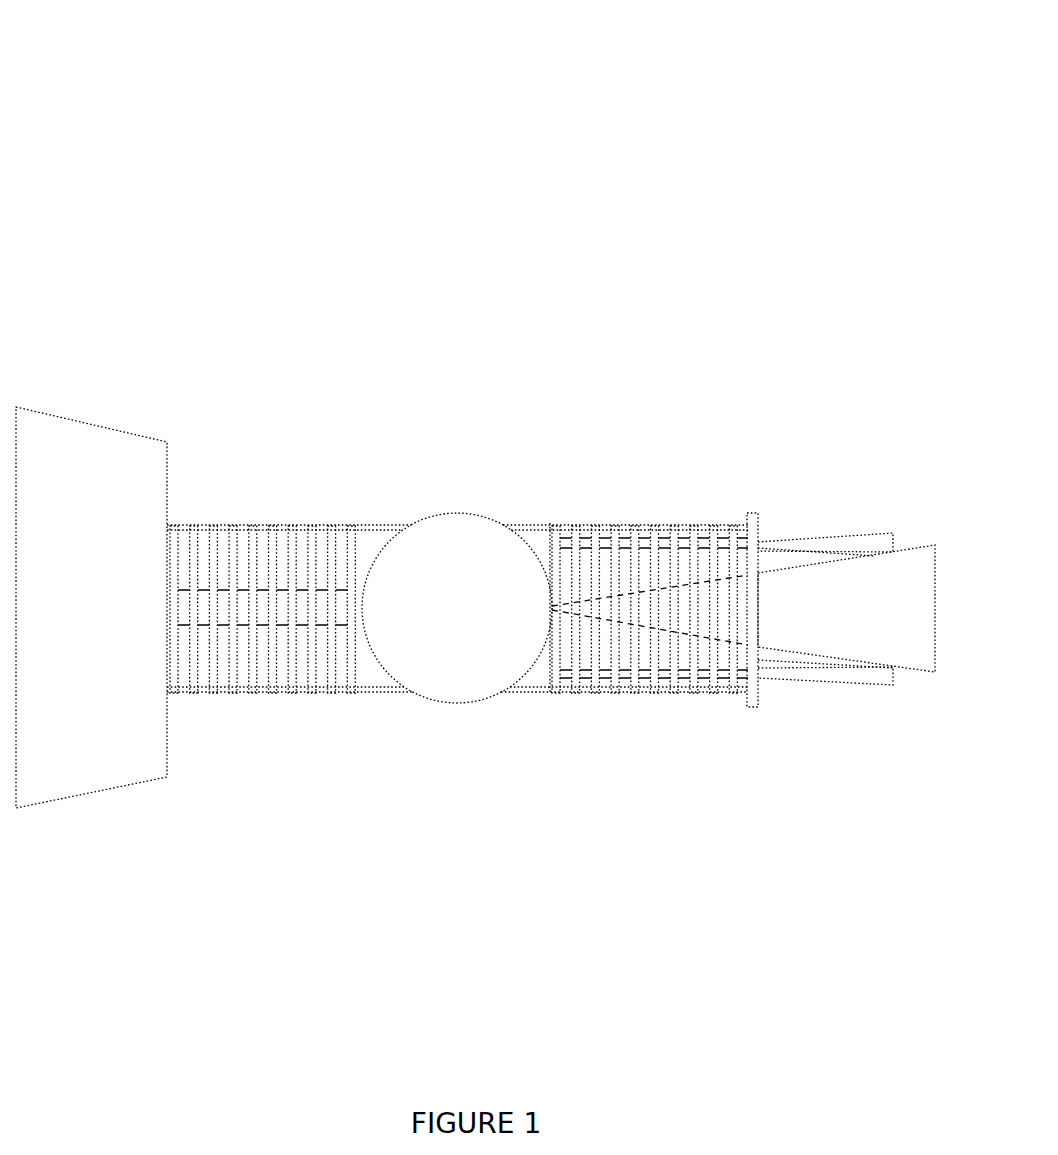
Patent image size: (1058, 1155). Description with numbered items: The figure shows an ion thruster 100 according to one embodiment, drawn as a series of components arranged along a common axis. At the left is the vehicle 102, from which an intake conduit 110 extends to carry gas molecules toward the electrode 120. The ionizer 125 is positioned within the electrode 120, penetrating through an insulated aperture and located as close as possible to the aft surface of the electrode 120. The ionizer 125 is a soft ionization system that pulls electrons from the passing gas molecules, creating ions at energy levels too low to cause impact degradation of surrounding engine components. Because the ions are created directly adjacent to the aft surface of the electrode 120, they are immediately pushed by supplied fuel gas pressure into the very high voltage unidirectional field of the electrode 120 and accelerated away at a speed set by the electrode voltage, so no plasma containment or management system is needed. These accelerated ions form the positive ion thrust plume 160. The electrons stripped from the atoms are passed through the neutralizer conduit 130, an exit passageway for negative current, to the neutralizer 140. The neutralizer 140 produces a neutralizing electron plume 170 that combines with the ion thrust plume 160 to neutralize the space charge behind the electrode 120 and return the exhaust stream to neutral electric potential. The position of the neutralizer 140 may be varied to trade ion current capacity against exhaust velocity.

The ion thruster 100 is at (137, 146).
The vehicle 102 is at (77, 490).
The intake conduit 110 is at (293, 530).
The electrode 120 is at (468, 560).
The ionizer 125 is at (550, 607).
The neutralizer conduit 130 is at (602, 682).
The neutralizer 140 is at (752, 690).
The positive ion thrust plume 160 is at (807, 628).
The neutralizing electron plume 170 is at (858, 545).